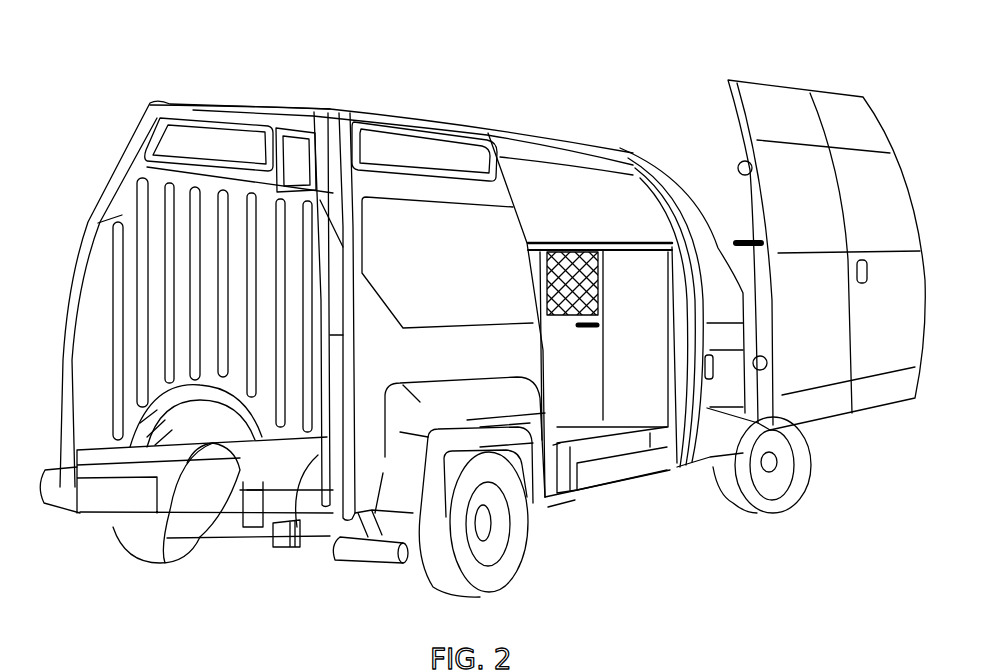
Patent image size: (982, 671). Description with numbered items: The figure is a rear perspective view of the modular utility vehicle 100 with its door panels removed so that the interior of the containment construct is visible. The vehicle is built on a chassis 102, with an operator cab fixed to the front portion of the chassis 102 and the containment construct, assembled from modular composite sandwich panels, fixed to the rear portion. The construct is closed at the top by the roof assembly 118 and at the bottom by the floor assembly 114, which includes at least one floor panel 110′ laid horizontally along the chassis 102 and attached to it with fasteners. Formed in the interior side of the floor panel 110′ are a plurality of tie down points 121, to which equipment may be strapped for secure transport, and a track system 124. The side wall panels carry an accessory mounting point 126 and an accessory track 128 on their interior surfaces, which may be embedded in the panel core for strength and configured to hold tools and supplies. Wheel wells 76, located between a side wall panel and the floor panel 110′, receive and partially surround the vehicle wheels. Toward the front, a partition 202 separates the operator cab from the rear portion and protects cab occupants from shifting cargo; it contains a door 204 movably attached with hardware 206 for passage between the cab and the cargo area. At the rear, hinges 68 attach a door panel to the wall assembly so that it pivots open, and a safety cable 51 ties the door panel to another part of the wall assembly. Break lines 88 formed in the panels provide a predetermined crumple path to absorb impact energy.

The modular utility vehicle 100 is at (409, 310).
The roof assembly 118 is at (400, 118).
The accessory mounting point 126 is at (137, 192).
The accessory track 128 is at (163, 240).
The break lines 88 is at (158, 512).
The chassis 102 is at (137, 488).
The track system 124 is at (227, 540).
The tie down points 121 is at (302, 547).
The wheel wells 76 is at (442, 400).
The floor panel 110′ is at (615, 440).
The partition 202 is at (632, 257).
The hardware 206 is at (588, 248).
The door 204 is at (587, 337).
The floor assembly 114 is at (562, 447).
The hinges 68 is at (739, 164).
The safety cable 51 is at (742, 240).